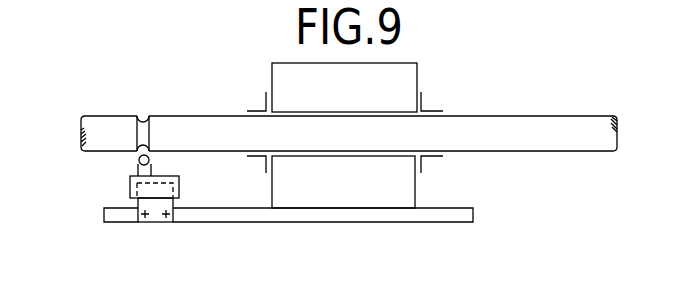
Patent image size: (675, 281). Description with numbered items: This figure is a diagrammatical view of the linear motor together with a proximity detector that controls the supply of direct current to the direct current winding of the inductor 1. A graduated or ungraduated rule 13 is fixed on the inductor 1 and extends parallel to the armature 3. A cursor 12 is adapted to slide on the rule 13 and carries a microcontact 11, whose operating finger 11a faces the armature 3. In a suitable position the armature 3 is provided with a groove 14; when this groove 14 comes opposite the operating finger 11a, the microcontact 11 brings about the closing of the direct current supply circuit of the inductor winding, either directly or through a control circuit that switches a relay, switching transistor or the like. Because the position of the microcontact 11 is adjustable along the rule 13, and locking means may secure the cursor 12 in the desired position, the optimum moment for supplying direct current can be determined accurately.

The inductor 1 is at (419, 78).
The armature 3 is at (484, 131).
The groove 14 is at (144, 111).
The operating finger 11a is at (137, 165).
The microcontact 11 is at (130, 189).
The cursor 12 is at (168, 202).
The rule 13 is at (213, 213).